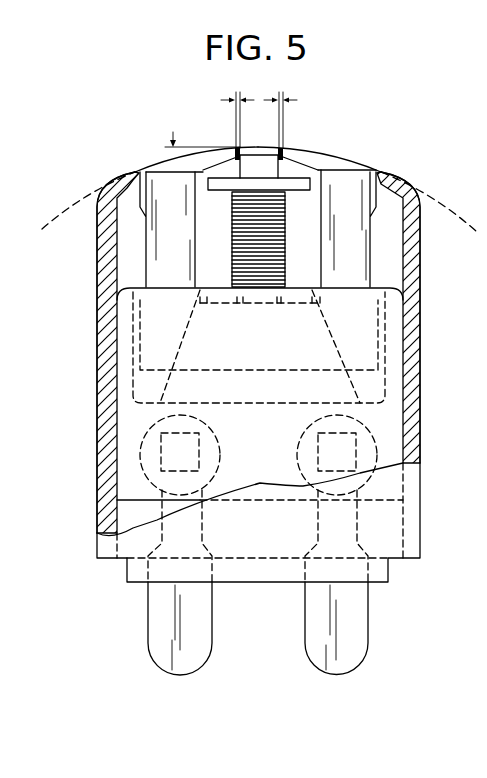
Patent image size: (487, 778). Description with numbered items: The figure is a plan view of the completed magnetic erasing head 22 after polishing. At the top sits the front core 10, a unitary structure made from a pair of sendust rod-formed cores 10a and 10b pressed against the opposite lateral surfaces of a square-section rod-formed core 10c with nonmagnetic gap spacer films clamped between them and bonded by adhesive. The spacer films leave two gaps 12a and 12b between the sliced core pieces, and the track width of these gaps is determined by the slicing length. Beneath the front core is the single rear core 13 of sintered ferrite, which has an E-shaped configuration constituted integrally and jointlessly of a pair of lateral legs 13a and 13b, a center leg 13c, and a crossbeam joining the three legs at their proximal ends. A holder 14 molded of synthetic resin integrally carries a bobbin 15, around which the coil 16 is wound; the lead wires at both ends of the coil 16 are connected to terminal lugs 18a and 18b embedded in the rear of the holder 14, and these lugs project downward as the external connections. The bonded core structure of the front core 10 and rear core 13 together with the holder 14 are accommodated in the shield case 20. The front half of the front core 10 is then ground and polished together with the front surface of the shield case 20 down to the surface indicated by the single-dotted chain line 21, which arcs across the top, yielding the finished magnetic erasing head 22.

The front core 10 is at (362, 160).
The rod-formed core 10a is at (328, 156).
The rod-formed core 10b is at (160, 161).
The rod-formed core with square cross-section 10c is at (262, 150).
The gap 12a is at (283, 156).
The gap 12b is at (235, 151).
The rear core 13 is at (391, 248).
The leg 13a is at (371, 204).
The leg 13b is at (143, 230).
The center leg 13c is at (240, 176).
The holder 14 is at (397, 344).
The bobbin 15 is at (292, 187).
The coil 16 is at (284, 247).
The terminal lug 18a is at (363, 623).
The terminal lug 18b is at (148, 637).
The shield case 20 is at (98, 289).
The single-dotted chain line 21 is at (57, 215).
The magnetic erasing head 22 is at (447, 127).